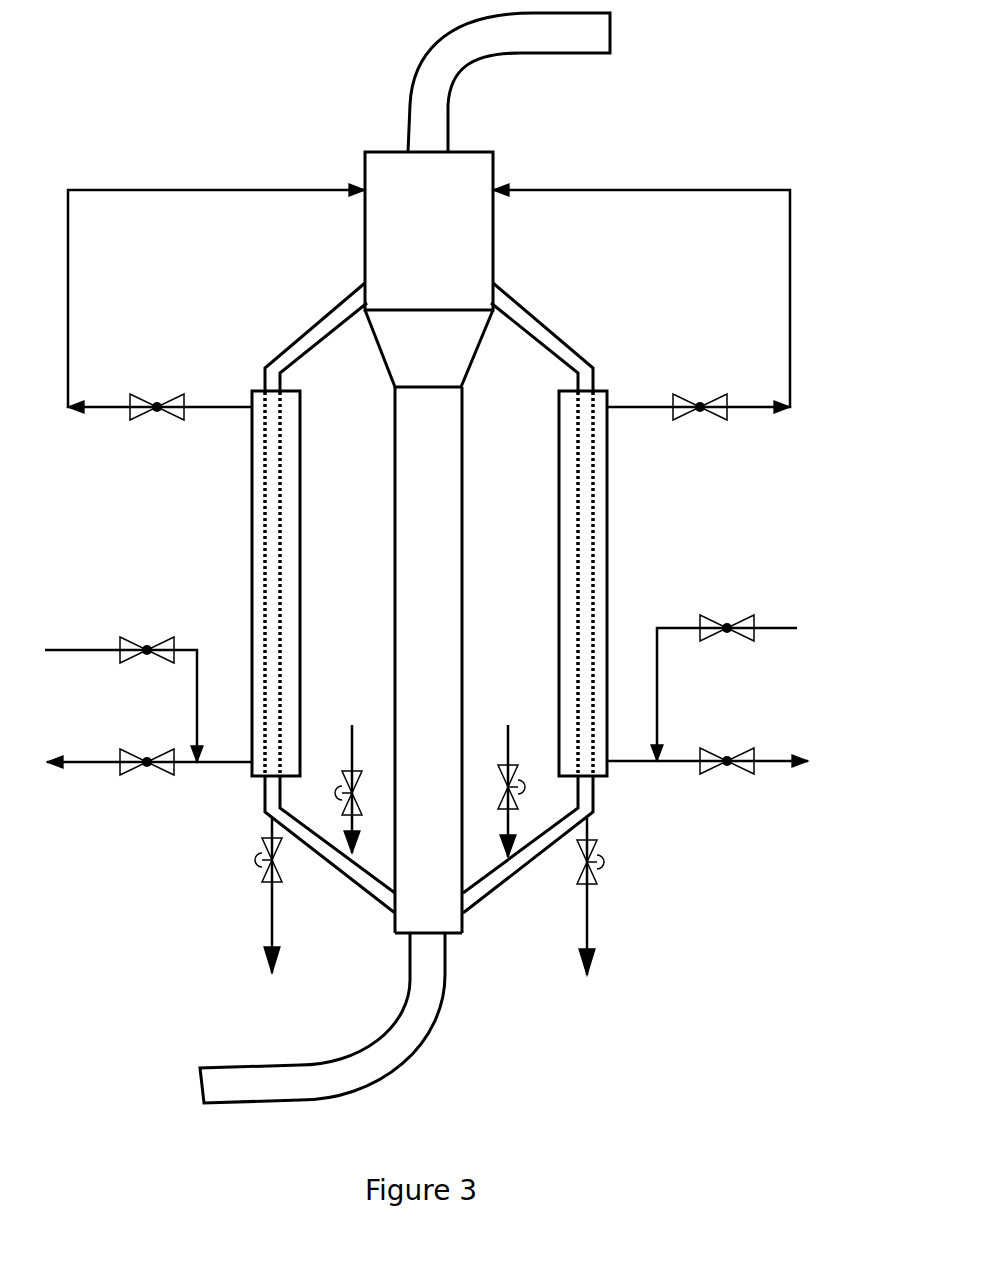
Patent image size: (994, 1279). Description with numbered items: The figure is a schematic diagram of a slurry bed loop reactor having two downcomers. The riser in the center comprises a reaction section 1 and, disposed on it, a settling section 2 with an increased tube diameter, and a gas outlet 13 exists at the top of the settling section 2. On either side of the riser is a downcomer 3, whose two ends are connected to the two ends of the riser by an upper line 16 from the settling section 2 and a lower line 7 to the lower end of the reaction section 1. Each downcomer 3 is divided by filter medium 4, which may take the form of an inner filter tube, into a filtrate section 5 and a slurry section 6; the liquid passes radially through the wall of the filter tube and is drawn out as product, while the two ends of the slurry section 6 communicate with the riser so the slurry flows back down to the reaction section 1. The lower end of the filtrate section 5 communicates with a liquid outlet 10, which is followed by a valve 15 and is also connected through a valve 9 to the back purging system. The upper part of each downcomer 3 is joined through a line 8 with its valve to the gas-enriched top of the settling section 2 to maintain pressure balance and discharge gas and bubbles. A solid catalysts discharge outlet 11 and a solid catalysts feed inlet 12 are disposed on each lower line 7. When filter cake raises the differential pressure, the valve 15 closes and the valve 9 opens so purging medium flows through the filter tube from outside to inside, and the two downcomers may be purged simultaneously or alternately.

The reaction section 1 is at (412, 452).
The settling section 2 is at (370, 172).
The downcomer 3 is at (250, 460).
The filter medium 4 is at (281, 480).
The filtrate section 5 is at (287, 553).
The slurry section 6 is at (268, 625).
The line 7 is at (350, 882).
The line 8 is at (153, 415).
The valve 9 is at (140, 645).
The liquid outlet 10 is at (215, 765).
The solid catalysts discharge outlet 11 is at (268, 910).
The solid catalysts feed inlet 12 is at (345, 822).
The gas outlet 13 is at (500, 45).
The valve 15 is at (145, 752).
The line 16 is at (305, 333).